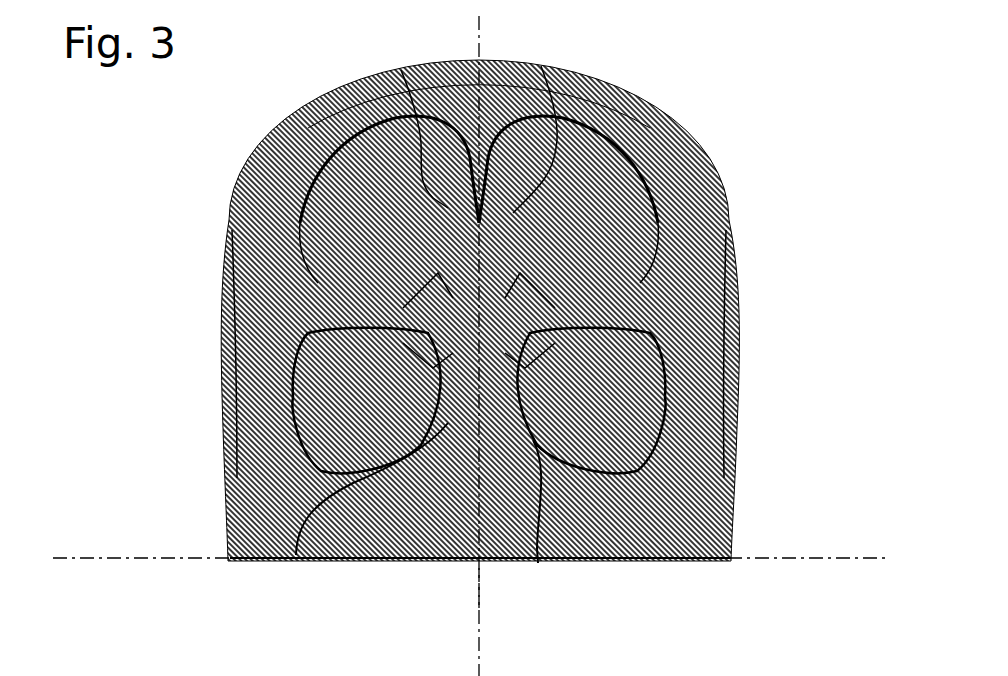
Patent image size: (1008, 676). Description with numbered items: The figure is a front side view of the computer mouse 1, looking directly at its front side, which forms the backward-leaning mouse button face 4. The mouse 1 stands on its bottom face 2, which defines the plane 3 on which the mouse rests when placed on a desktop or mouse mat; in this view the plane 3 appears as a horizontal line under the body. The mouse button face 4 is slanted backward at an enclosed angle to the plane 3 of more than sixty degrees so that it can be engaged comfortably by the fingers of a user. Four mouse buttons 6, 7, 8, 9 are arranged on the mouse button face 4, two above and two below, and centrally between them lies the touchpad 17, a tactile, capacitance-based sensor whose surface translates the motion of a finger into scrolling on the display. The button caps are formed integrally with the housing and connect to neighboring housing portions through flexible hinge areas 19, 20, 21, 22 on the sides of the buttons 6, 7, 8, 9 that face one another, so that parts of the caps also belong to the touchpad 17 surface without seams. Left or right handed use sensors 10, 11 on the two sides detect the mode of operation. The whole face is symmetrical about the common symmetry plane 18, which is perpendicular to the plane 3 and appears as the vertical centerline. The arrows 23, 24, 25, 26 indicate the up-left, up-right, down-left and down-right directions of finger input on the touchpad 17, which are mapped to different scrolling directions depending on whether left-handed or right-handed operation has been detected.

The computer mouse 1 is at (668, 99).
The bottom face 2 is at (420, 555).
The plane 3 is at (757, 558).
The mouse button face 4 is at (604, 68).
The mouse button 6 is at (389, 199).
The mouse button 7 is at (568, 199).
The mouse button 8 is at (366, 400).
The mouse button 9 is at (591, 400).
The left or right handed use sensor 10 is at (222, 282).
The left or right handed use sensor 11 is at (723, 283).
The touchpad 17 is at (488, 58).
The common symmetry plane 18 is at (471, 600).
The flexible hinge area 19 is at (390, 62).
The flexible hinge area 20 is at (533, 57).
The flexible hinge area 21 is at (288, 547).
The flexible hinge area 22 is at (530, 560).
The up-left direction of input 23 is at (437, 255).
The up-right direction of input 24 is at (497, 285).
The down-left direction of input 25 is at (437, 340).
The down-right direction of input 26 is at (505, 340).